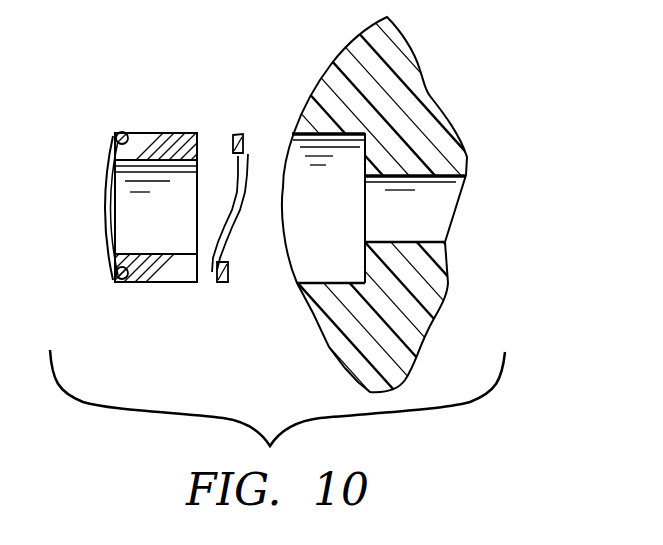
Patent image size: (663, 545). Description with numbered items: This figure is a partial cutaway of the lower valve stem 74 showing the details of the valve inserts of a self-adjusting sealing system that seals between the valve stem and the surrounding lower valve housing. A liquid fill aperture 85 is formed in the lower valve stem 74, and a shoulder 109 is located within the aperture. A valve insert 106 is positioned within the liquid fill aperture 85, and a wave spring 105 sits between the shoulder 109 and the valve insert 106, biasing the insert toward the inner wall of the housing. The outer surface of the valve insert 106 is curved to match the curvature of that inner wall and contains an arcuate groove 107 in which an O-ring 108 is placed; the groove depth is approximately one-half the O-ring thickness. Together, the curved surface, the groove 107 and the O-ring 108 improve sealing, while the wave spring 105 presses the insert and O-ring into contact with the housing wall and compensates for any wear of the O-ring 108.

The lower valve stem 74 is at (333, 90).
The liquid fill aperture 85 is at (440, 212).
The wave spring 105 is at (222, 283).
The valve insert 106 is at (137, 132).
The arcuate groove 107 is at (117, 134).
The O-ring 108 is at (121, 280).
The shoulder 109 is at (353, 267).